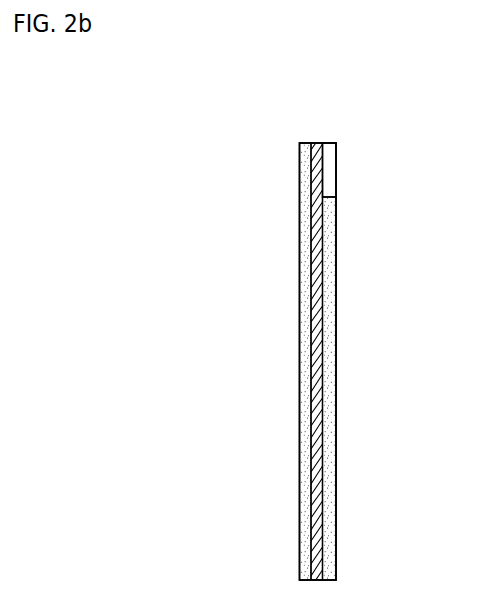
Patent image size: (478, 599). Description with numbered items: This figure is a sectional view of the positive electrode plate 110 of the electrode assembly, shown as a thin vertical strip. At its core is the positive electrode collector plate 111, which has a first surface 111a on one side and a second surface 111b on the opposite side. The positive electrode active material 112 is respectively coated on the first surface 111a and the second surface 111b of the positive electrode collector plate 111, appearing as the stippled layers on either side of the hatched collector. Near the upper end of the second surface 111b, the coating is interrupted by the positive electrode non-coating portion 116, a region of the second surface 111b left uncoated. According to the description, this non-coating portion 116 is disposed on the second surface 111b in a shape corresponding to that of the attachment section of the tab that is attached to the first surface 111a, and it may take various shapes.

The positive electrode plate 110 is at (380, 115).
The positive electrode collector plate 111 is at (318, 158).
The first surface 111a is at (300, 198).
The second surface 111b is at (328, 219).
The positive electrode active material 112 is at (327, 333).
The positive electrode non-coating portion 116 is at (329, 179).